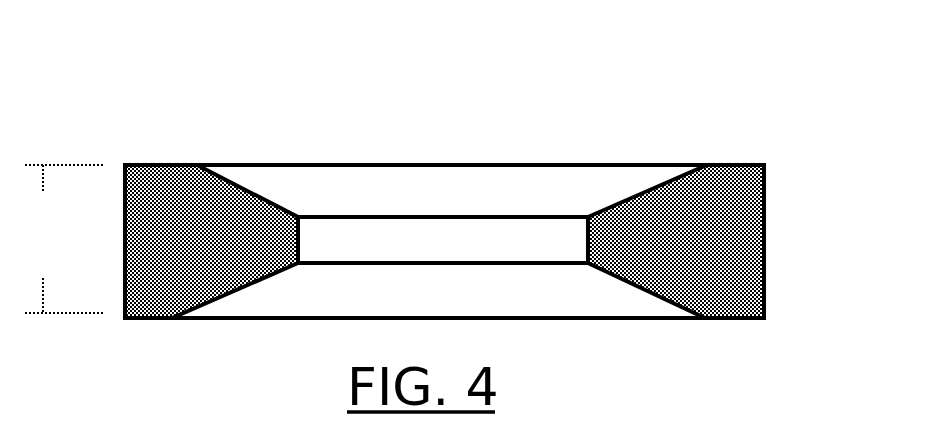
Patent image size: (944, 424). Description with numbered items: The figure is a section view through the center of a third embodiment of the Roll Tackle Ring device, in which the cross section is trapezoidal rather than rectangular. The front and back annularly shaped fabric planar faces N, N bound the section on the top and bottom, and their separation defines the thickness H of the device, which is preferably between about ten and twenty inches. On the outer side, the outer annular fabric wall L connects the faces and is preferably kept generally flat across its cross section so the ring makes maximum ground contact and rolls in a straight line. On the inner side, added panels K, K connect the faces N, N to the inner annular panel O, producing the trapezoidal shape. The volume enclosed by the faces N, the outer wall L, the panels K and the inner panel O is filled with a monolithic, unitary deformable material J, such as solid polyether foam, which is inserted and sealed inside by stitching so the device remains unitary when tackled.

The thickness H is at (64, 239).
The left end face I is at (133, 167).
The deformable material J is at (187, 240).
The panels K is at (447, 288).
The outer annular curved fabric planar wall L is at (765, 268).
The central core section M is at (490, 242).
The annularly shaped fabric planar faces N is at (735, 165).
The inner annular curved fabric planar wall O is at (342, 237).